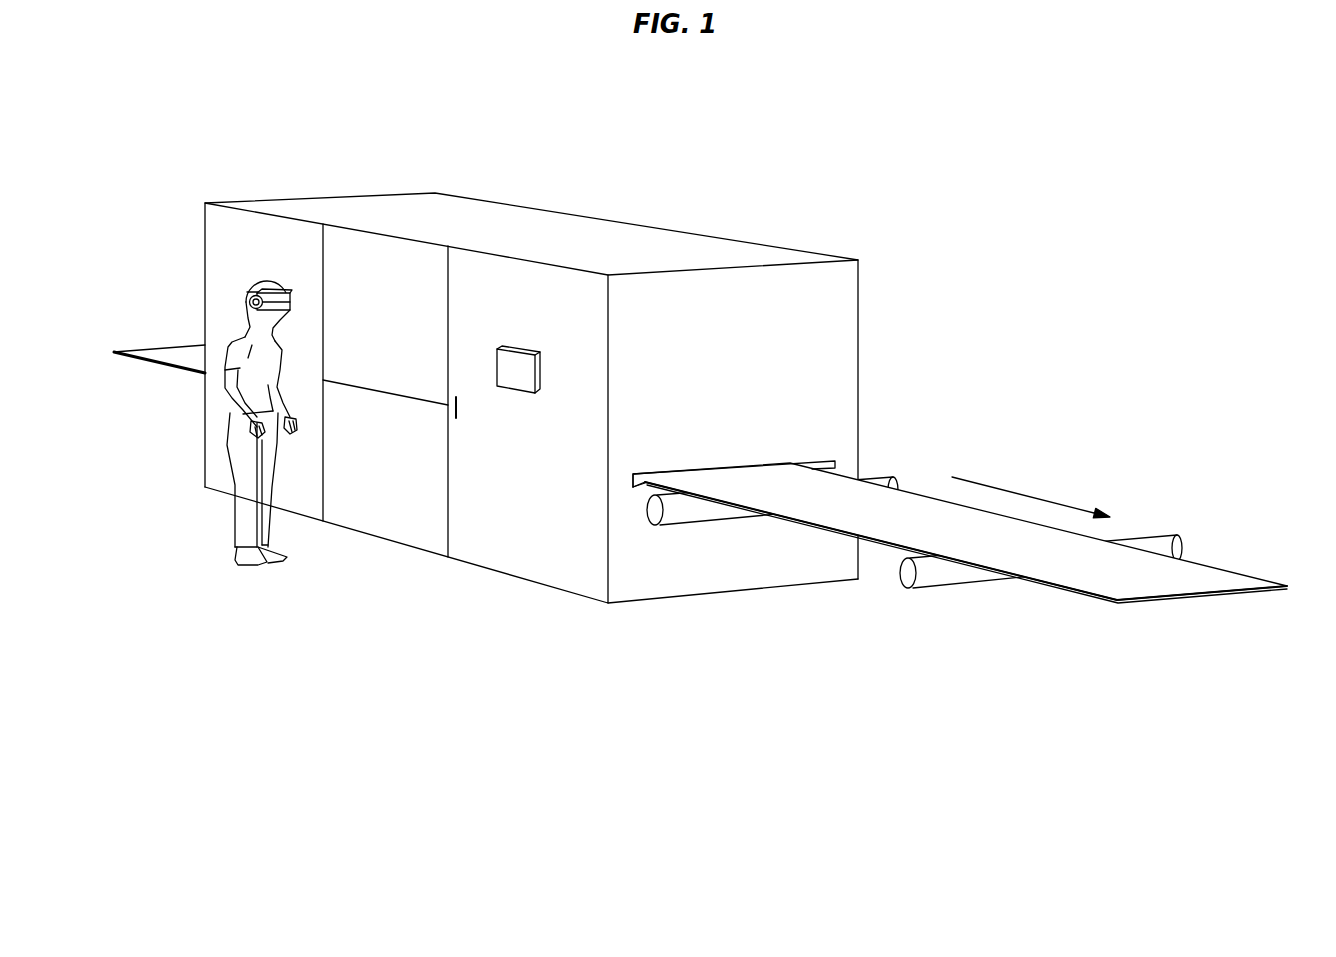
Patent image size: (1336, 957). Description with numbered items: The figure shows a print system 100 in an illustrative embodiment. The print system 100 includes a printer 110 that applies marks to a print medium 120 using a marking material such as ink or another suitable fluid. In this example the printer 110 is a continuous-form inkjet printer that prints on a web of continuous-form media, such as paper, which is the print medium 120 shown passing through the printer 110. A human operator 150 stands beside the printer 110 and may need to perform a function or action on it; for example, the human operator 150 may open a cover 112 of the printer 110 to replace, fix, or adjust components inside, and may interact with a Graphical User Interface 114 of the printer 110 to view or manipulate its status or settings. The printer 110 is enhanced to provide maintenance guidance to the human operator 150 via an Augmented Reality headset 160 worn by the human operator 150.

The print system 100 is at (397, 98).
The printer 110 is at (658, 242).
The cover 112 is at (423, 321).
The Graphical User Interface (GUI) 114 is at (516, 350).
The print medium 120 is at (903, 502).
The human operator 150 is at (228, 502).
The Augmented Reality (AR) headset 160 is at (250, 287).